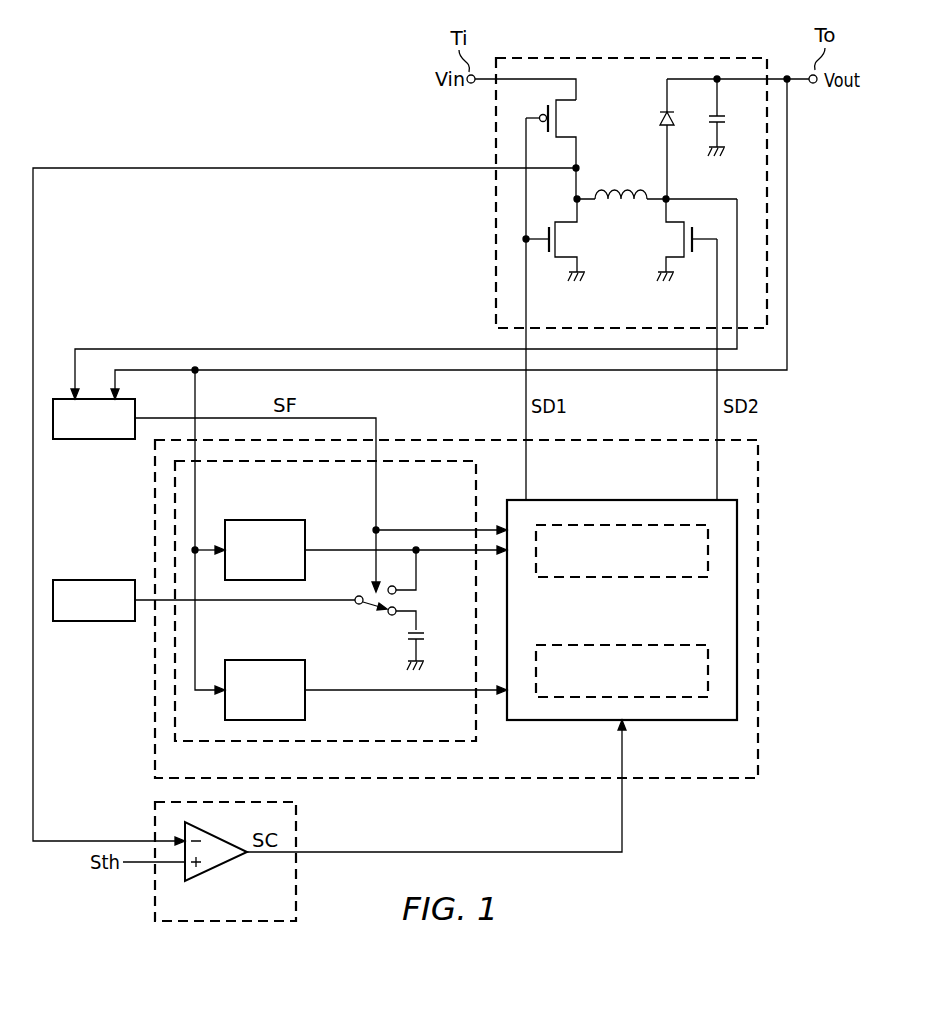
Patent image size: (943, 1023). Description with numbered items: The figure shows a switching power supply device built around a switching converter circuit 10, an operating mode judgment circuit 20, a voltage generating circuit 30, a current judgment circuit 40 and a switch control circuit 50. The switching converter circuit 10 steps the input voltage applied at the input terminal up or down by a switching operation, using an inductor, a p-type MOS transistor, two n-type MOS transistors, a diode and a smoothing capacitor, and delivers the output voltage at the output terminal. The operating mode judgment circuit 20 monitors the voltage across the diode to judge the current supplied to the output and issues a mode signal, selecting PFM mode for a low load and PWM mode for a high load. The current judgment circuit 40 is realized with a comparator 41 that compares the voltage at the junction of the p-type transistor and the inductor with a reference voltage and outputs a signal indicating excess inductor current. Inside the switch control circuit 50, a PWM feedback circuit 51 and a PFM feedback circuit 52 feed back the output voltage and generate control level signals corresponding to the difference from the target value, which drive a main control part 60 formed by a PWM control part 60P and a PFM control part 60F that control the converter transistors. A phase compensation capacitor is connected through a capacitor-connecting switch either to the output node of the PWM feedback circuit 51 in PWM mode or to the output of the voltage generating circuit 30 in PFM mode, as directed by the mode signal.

The switching converter circuit 10 is at (630, 52).
The operating mode judgment circuit 20 is at (93, 440).
The voltage generating circuit 30 is at (93, 622).
The current judgment circuit 40 is at (214, 932).
The comparator 41 is at (216, 869).
The switch control circuit 50 is at (768, 631).
The PWM feedback circuit 51 is at (266, 520).
The PFM feedback circuit 52 is at (266, 660).
The main control part 60 is at (610, 620).
The PWM control part 60P is at (668, 577).
The PFM control part 60F is at (577, 645).